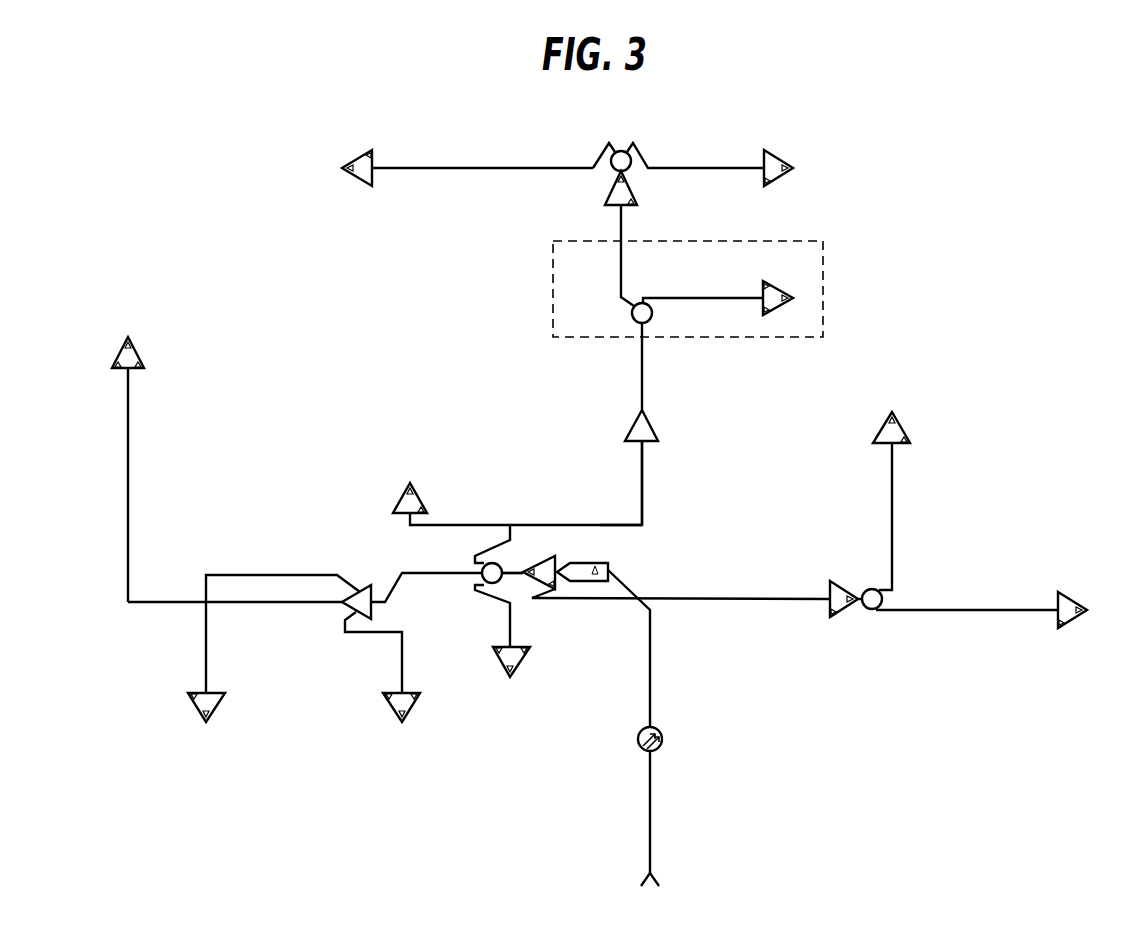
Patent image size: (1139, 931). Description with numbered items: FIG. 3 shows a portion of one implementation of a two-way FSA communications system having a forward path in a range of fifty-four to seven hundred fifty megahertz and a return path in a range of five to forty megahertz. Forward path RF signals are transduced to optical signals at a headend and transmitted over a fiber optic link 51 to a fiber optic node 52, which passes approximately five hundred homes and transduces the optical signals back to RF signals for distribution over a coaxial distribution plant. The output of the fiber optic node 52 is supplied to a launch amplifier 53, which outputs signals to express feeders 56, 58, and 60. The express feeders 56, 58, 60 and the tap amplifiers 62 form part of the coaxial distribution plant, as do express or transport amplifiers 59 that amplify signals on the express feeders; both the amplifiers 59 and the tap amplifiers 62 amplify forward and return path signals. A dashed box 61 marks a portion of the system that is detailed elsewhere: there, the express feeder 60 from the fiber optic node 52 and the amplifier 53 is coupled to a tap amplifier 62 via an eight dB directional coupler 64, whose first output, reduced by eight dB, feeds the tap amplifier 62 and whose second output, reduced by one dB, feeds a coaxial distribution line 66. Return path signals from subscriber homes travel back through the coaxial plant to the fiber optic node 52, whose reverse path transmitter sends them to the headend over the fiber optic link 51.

The fiber optic link 51 is at (649, 808).
The fiber optic node 52 is at (598, 563).
The launch amplifier 53 is at (546, 556).
The express feeder 56 is at (568, 600).
The express feeder 58 is at (520, 570).
The express amplifier 59 is at (605, 196).
The express feeder 60 is at (600, 525).
The box 61 is at (790, 241).
The tap amplifier 62 is at (358, 182).
The directional coupler 64 is at (633, 317).
The coaxial distribution line 66 is at (621, 270).